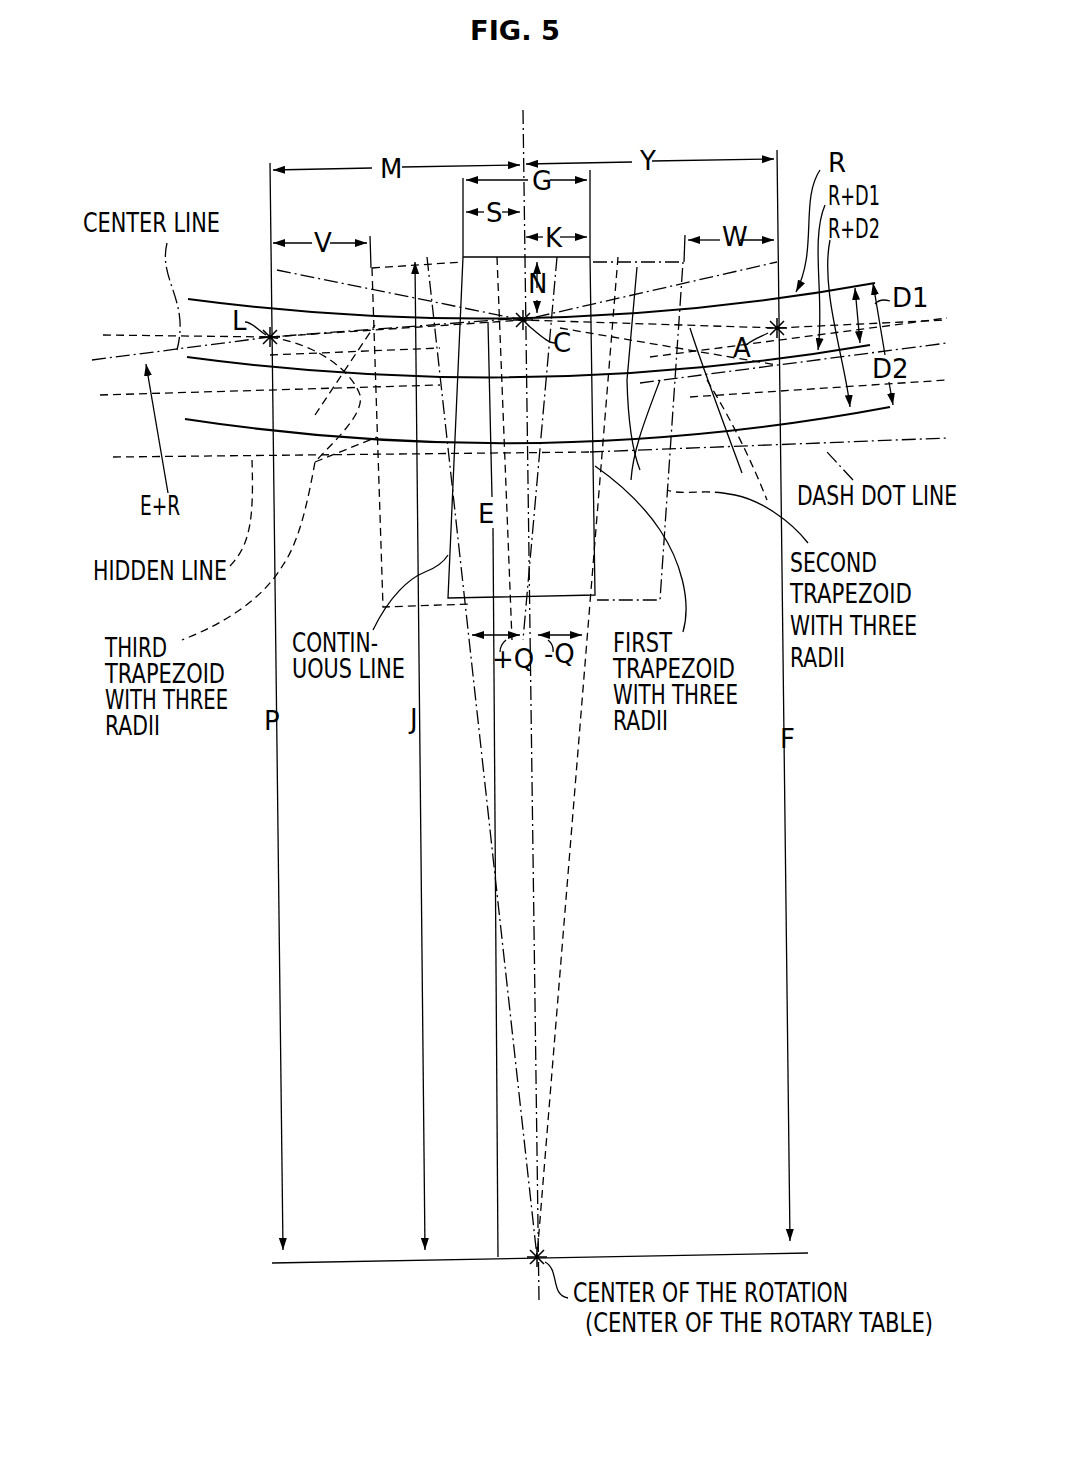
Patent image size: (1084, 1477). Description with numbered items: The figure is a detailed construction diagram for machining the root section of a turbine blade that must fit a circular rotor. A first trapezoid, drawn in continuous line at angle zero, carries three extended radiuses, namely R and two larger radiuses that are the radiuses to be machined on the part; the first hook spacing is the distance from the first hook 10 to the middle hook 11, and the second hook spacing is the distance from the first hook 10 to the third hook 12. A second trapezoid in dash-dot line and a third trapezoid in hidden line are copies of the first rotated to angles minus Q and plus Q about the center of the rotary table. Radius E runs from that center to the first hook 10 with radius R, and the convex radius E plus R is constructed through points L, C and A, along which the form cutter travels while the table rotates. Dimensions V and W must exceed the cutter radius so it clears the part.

The first hook 10 is at (870, 283).
The middle hook 11 is at (869, 347).
The third hook 12 is at (868, 412).